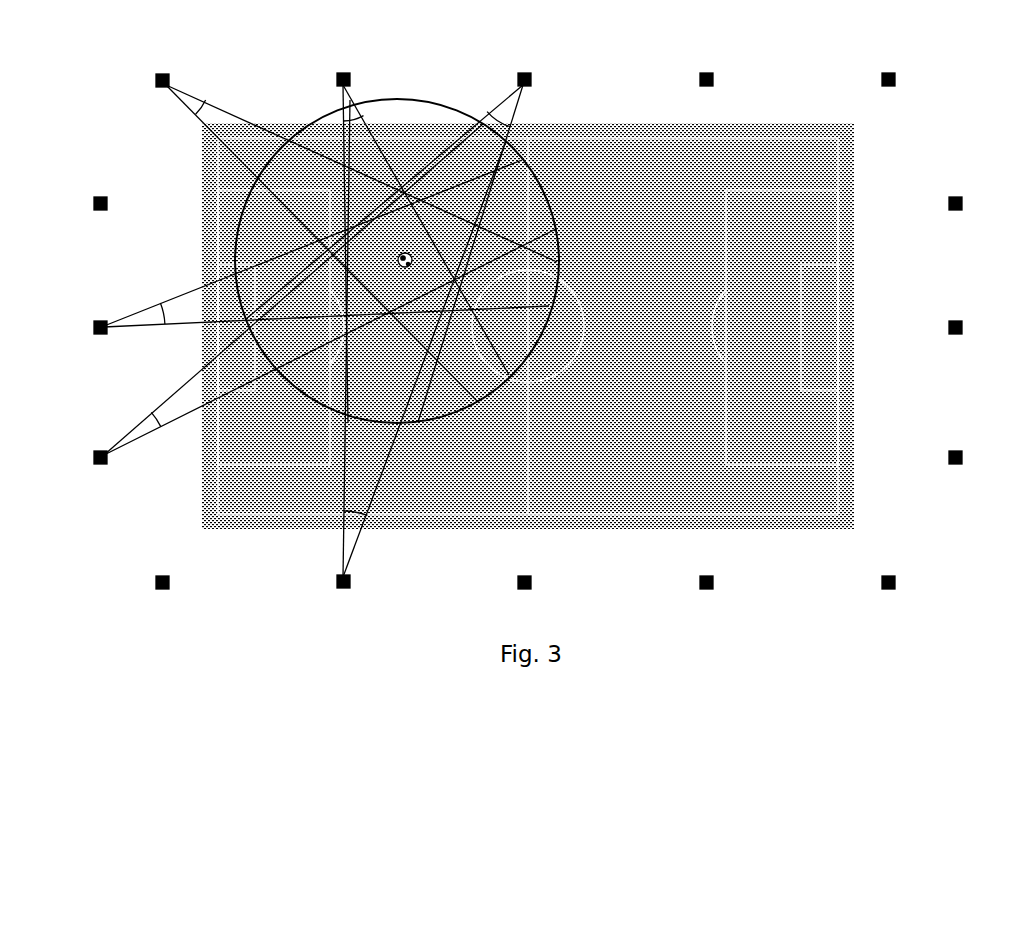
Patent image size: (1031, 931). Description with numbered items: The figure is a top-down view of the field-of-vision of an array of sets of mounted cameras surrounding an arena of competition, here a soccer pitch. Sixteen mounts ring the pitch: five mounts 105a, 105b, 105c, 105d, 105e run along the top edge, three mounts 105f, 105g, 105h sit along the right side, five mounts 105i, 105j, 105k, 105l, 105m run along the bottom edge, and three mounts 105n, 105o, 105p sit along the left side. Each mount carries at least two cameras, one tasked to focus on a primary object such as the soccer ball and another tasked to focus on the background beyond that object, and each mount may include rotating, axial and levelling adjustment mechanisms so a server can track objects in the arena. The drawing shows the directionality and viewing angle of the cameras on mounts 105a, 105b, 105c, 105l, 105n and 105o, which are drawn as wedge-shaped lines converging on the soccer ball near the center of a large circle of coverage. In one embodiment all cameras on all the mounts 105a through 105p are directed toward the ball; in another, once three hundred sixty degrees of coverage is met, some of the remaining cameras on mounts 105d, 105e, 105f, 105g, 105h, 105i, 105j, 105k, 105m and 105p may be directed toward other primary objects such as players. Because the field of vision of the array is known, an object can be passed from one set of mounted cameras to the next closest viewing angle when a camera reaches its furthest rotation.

The mount 105a is at (350, 226).
The mount 105b is at (416, 237).
The mount 105c is at (394, 237).
The mount 105d is at (706, 69).
The mount 105e is at (888, 69).
The mount 105f is at (976, 204).
The mount 105g is at (977, 328).
The mount 105h is at (977, 458).
The mount 105i is at (888, 594).
The mount 105j is at (706, 594).
The mount 105k is at (525, 594).
The mount 105l is at (416, 356).
The mount 105m is at (161, 594).
The mount 105n is at (304, 295).
The mount 105o is at (300, 248).
The mount 105p is at (79, 204).